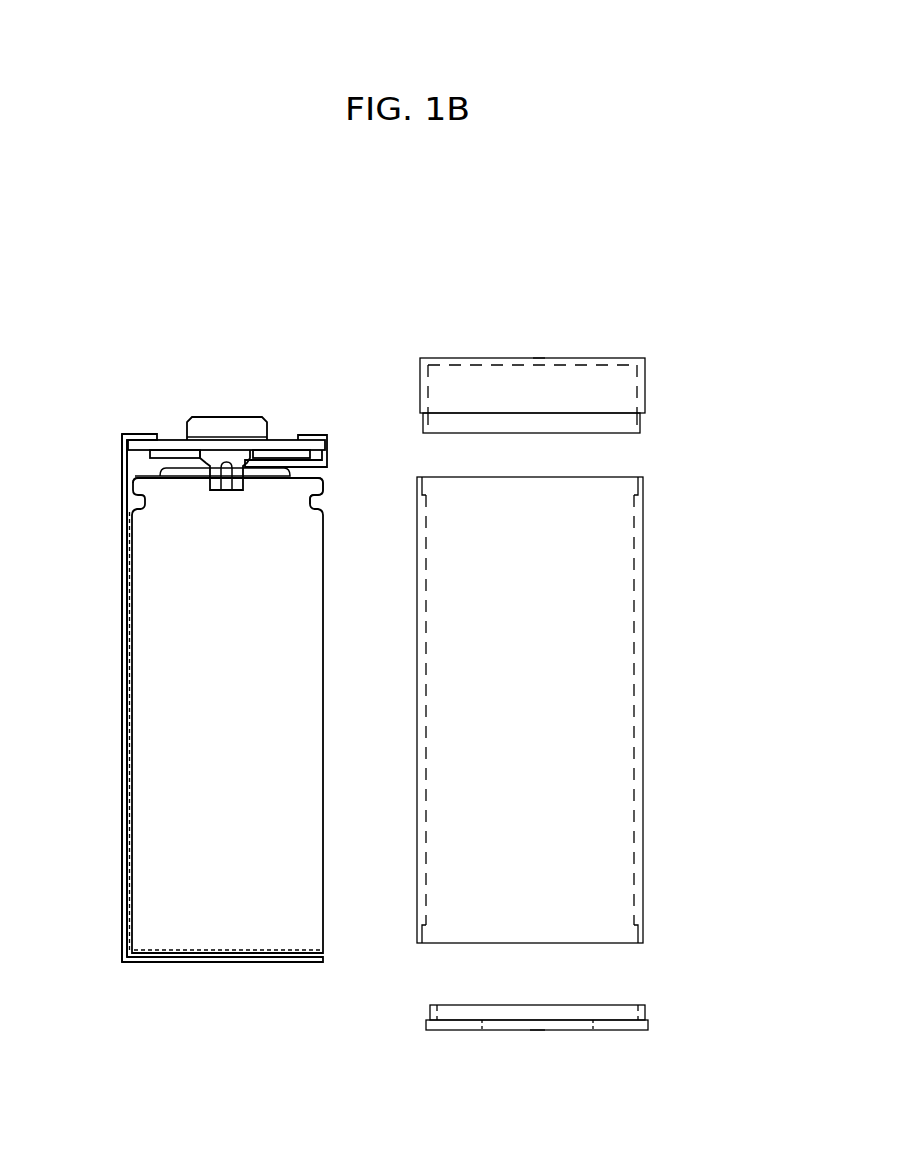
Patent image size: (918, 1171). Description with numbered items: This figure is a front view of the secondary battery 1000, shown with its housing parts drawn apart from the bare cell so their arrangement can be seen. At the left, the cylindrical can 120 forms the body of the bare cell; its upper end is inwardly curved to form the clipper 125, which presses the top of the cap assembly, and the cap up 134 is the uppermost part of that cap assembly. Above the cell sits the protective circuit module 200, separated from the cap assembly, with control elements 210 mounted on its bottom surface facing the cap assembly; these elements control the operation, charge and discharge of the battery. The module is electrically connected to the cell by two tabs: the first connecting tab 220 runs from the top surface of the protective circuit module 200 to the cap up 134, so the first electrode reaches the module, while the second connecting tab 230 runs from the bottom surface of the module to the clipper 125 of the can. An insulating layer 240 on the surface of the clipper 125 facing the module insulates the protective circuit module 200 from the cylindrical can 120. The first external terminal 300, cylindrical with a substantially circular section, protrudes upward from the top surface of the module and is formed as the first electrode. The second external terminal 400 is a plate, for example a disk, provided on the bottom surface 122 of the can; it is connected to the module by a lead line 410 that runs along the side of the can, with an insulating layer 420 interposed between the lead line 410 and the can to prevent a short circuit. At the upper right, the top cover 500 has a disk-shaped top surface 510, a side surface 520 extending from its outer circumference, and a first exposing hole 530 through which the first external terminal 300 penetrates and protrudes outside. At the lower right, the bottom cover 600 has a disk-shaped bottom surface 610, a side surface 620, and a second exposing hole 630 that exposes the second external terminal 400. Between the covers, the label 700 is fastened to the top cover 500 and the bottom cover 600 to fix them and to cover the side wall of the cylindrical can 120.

The secondary battery 1000 is at (98, 286).
The cylindrical can 120 is at (323, 650).
The bottom surface 122 is at (243, 972).
The clipper 125 is at (323, 488).
The cap up 134 is at (166, 468).
The protective circuit module 200 is at (144, 439).
The control elements 210 is at (195, 451).
The first connecting tab 220 is at (313, 436).
The second connecting tab 230 is at (236, 458).
The insulating layer 240 is at (148, 477).
The first external terminal 300 is at (203, 417).
The second external terminal 400 is at (160, 962).
The lead line 410 is at (122, 740).
The insulating layer 420 is at (127, 808).
The top cover 500 is at (603, 361).
The top surface 510 is at (608, 358).
The side surface 520 is at (636, 396).
The first exposing hole 530 is at (534, 345).
The bottom cover 600 is at (607, 1052).
The bottom surface 610 is at (648, 1028).
The side surface 620 is at (645, 1008).
The second exposing hole 630 is at (535, 1048).
The label 700 is at (643, 650).